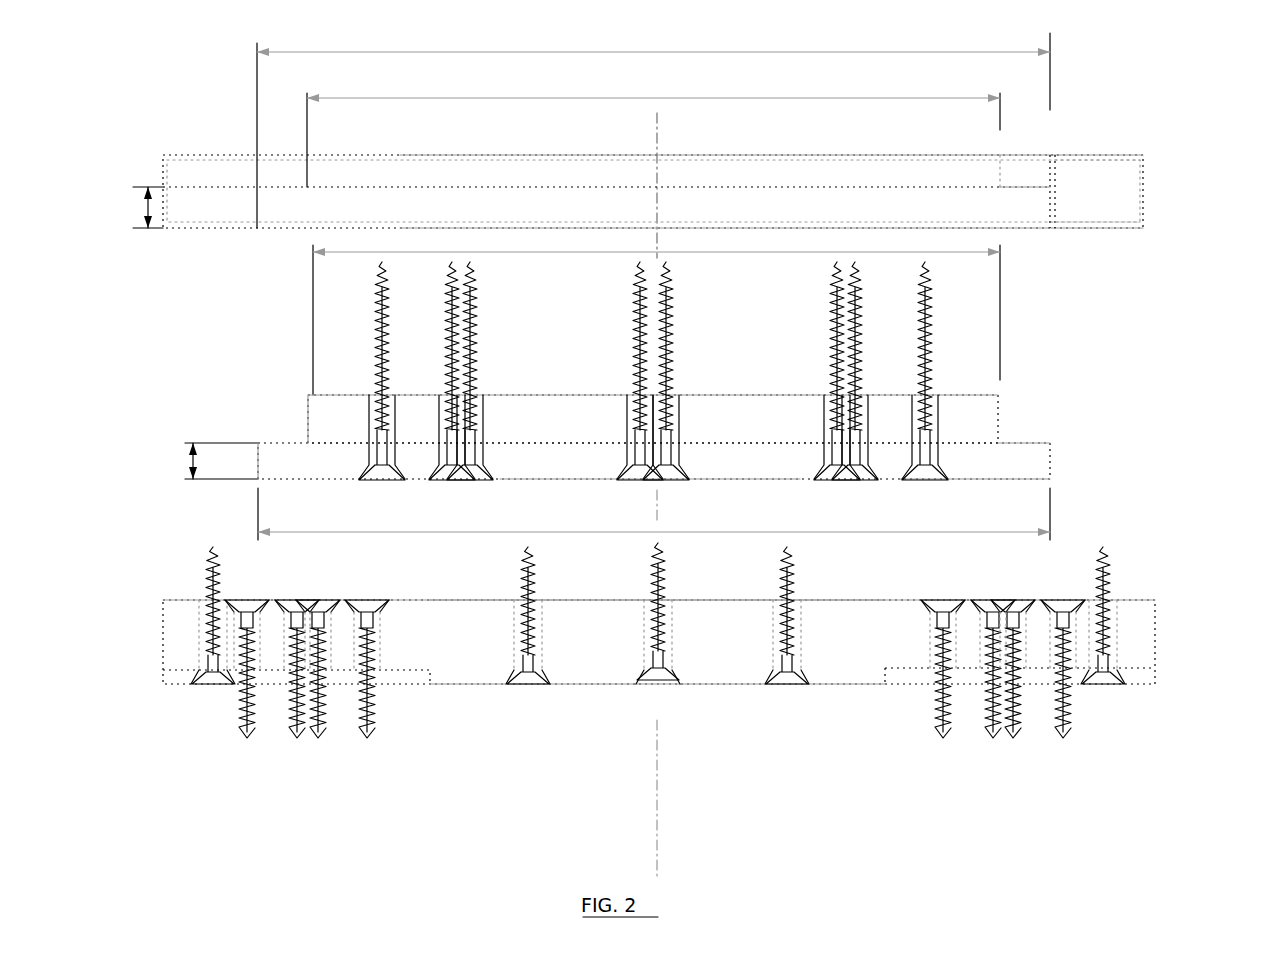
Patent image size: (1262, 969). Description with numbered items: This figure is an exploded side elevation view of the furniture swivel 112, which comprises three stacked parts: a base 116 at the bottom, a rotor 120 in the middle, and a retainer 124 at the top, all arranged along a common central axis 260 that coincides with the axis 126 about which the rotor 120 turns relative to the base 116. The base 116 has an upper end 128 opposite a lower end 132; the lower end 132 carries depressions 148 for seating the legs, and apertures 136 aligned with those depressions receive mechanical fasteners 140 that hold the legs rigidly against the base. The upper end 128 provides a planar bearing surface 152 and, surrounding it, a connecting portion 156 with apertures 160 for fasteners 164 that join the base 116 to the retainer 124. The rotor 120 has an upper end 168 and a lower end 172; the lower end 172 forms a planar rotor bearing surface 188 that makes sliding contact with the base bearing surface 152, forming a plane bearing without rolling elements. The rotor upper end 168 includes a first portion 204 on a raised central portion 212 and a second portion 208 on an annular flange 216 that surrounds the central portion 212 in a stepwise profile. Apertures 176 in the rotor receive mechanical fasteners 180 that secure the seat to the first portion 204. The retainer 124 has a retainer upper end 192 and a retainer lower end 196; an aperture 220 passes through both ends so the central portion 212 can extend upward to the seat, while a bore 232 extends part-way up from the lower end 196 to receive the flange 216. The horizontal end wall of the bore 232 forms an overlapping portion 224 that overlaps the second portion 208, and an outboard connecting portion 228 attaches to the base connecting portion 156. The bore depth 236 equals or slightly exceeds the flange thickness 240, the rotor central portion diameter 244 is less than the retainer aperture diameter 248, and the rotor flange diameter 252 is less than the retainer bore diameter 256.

The furniture swivel 112 is at (1214, 93).
The base 116 is at (1158, 635).
The rotor 120 is at (1052, 463).
The retainer 124 is at (1145, 188).
The axis 126 is at (659, 127).
The upper end 128 is at (852, 598).
The lower end 132 is at (848, 686).
The apertures 136 is at (266, 622).
The mechanical fasteners 140 is at (247, 737).
The depressions 148 is at (414, 686).
The bearing surface 152 is at (694, 598).
The connecting portion 156 is at (1116, 619).
The apertures 160 is at (198, 629).
The fasteners 164 is at (208, 557).
The upper end 168 is at (1000, 413).
The lower end 172 is at (1048, 477).
The apertures 176 is at (356, 478).
The mechanical fasteners 180 is at (445, 313).
The rotor bearing surface 188 is at (712, 482).
The retainer upper end 192 is at (1145, 158).
The retainer lower end 196 is at (1145, 224).
The first portion 204 is at (728, 395).
The second portion 208 is at (1024, 443).
The central portion 212 is at (312, 419).
The flange 216 is at (270, 458).
The aperture 220 is at (985, 168).
The overlapping portion 224 is at (1026, 187).
The connecting portion 228 is at (1100, 230).
The bore 232 is at (1048, 206).
The bore depth 236 is at (143, 209).
The flange thickness 240 is at (190, 464).
The rotor central portion diameter 244 is at (370, 252).
The retainer aperture diameter 248 is at (922, 98).
The rotor flange diameter 252 is at (877, 532).
The retainer bore diameter 256 is at (708, 52).
The common central axis 260 is at (708, 183).